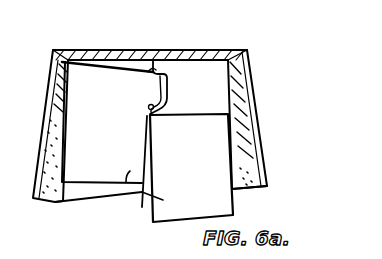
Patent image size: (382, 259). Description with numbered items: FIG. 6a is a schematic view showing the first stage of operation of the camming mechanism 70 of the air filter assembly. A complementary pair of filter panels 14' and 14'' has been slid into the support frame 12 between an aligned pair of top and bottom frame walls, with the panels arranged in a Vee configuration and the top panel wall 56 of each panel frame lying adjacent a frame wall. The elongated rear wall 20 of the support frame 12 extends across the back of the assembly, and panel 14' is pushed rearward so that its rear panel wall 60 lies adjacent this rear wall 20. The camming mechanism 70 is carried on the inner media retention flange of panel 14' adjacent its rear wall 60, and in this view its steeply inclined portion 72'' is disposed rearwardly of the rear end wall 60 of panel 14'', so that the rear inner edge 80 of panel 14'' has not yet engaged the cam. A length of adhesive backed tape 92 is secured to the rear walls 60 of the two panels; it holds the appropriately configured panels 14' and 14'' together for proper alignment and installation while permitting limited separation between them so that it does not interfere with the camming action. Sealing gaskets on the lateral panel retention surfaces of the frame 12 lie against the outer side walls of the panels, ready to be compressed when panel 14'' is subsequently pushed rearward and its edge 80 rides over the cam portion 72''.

The support frame 12 is at (155, 103).
The filter panel 14' is at (104, 146).
The filter panel 14'' is at (265, 175).
The rear wall 20 is at (132, 50).
The top panel wall 56 is at (131, 205).
The rear panel wall 60 is at (88, 50).
The camming mechanism 70 is at (235, 49).
The steeper rearwardly inclined portion of cam surface 72'' is at (119, 93).
The rear inner edge 80 is at (147, 124).
The adhesive backed tape 92 is at (170, 97).